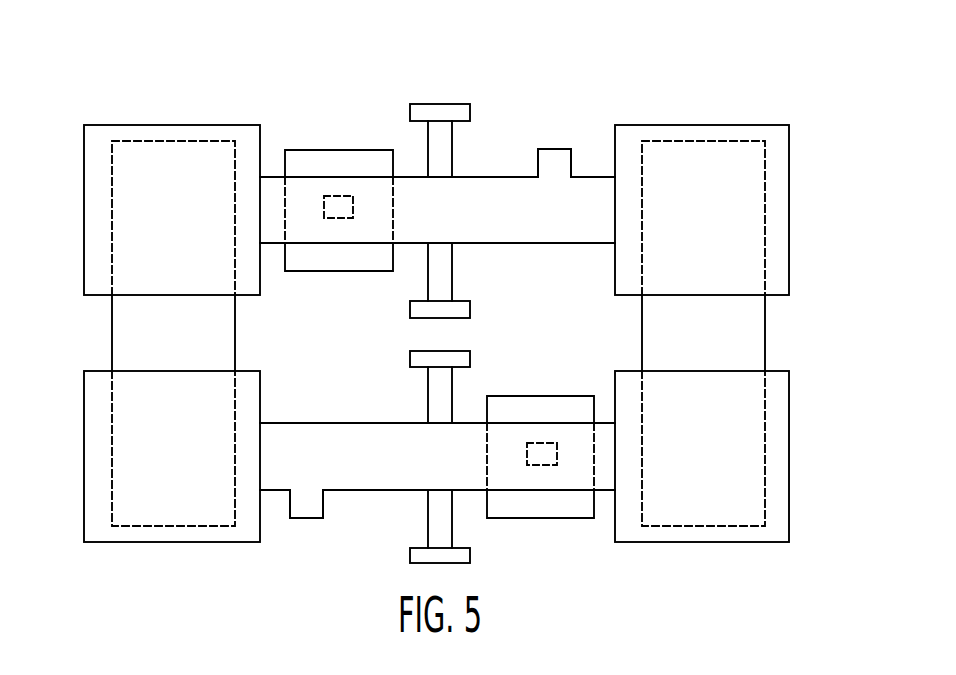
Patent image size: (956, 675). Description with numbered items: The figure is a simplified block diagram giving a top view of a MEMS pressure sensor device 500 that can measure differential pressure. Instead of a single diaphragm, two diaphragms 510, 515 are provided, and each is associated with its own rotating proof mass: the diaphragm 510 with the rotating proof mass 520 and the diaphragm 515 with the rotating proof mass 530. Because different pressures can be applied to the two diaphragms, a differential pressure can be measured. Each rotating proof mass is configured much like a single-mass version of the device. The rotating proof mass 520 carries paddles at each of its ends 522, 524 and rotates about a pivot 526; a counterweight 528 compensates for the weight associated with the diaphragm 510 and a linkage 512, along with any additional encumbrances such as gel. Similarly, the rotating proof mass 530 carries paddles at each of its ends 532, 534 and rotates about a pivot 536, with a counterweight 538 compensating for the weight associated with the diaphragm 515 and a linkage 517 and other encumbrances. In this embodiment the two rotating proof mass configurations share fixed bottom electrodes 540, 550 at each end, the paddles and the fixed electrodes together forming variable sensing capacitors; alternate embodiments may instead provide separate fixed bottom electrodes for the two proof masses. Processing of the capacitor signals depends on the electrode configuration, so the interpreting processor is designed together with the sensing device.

The MEMS pressure sensor device 500 is at (98, 30).
The diaphragm 510 is at (312, 157).
The linkage 512 is at (338, 212).
The diaphragm 515 is at (512, 404).
The linkage 517 is at (542, 458).
The rotating proof mass 520 is at (789, 170).
The end 522 is at (737, 133).
The end 524 is at (100, 133).
The pivot 526 is at (446, 150).
The counterweight 528 is at (555, 157).
The rotating proof mass 530 is at (789, 508).
The end 532 is at (735, 534).
The end 534 is at (101, 543).
The pivot 536 is at (433, 395).
The counterweight 538 is at (309, 513).
The fixed bottom electrode 540 is at (758, 335).
The fixed bottom electrode 550 is at (118, 333).